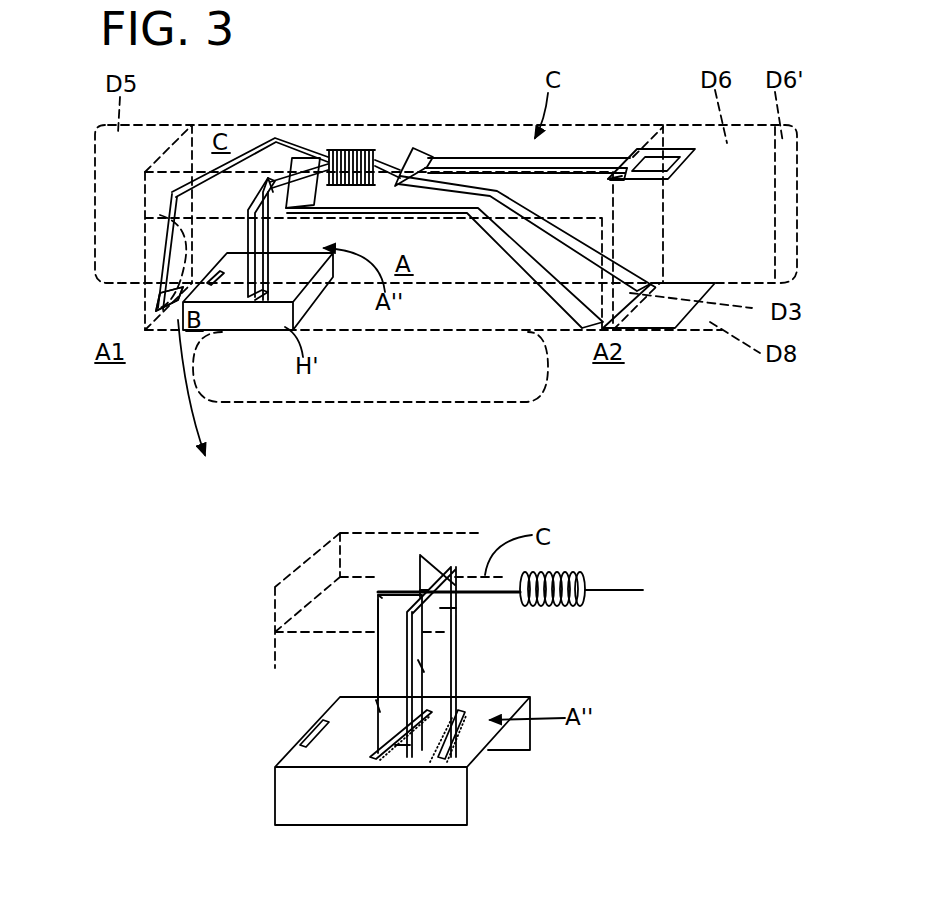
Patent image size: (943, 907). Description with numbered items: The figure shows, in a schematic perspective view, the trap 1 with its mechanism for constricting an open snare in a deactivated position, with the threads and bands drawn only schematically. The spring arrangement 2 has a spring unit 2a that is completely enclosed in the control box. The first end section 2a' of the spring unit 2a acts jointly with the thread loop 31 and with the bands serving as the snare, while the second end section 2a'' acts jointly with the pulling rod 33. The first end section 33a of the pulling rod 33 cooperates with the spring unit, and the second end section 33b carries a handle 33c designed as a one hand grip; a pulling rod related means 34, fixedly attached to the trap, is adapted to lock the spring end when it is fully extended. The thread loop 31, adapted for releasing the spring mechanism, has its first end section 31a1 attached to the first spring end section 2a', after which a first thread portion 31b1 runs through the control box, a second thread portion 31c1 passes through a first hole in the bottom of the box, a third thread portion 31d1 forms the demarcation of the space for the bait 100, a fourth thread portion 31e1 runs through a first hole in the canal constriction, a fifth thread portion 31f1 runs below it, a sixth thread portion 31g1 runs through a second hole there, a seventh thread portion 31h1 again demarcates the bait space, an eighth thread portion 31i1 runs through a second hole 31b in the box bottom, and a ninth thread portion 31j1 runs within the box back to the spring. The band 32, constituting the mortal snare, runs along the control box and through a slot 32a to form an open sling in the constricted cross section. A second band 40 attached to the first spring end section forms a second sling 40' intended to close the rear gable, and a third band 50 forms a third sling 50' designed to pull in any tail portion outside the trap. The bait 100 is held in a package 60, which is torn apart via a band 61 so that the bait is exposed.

The trap 1 is at (233, 116).
The spring arrangement 2 is at (450, 141).
The spring unit 2a is at (471, 338).
The first end section of the spring unit 2a' is at (322, 128).
The second end section of the spring unit 2a'' is at (330, 129).
The thread loop 31 is at (244, 264).
The band 32 is at (270, 308).
The slot 32a is at (447, 610).
The pulling rod 33 is at (494, 158).
The first end section of the pulling rod 33a is at (417, 150).
The second end section of the pulling rod 33b is at (613, 165).
The handle 33c is at (660, 150).
The pulling rod related means 34 is at (634, 184).
The second band 40 is at (343, 205).
The second sling or loop 40' is at (669, 283).
The third band 50 is at (444, 268).
The third sling or loop 50' is at (526, 250).
The band 61 is at (165, 243).
The bait 100 is at (165, 297).
The package 60 is at (97, 305).
The first end section of the thread 31a1 is at (495, 595).
The second hole 31b is at (377, 617).
The first thread portion 31b1 is at (425, 590).
The second thread portion 31c1 is at (422, 553).
The third thread portion 31d1 is at (422, 667).
The fourth thread portion 31e1 is at (420, 724).
The fifth thread portion 31f1 is at (402, 748).
The sixth thread portion 31g1 is at (378, 763).
The seventh thread portion 31h1 is at (377, 708).
The eighth thread portion 31i1 is at (378, 593).
The ninth thread portion 31j1 is at (403, 593).